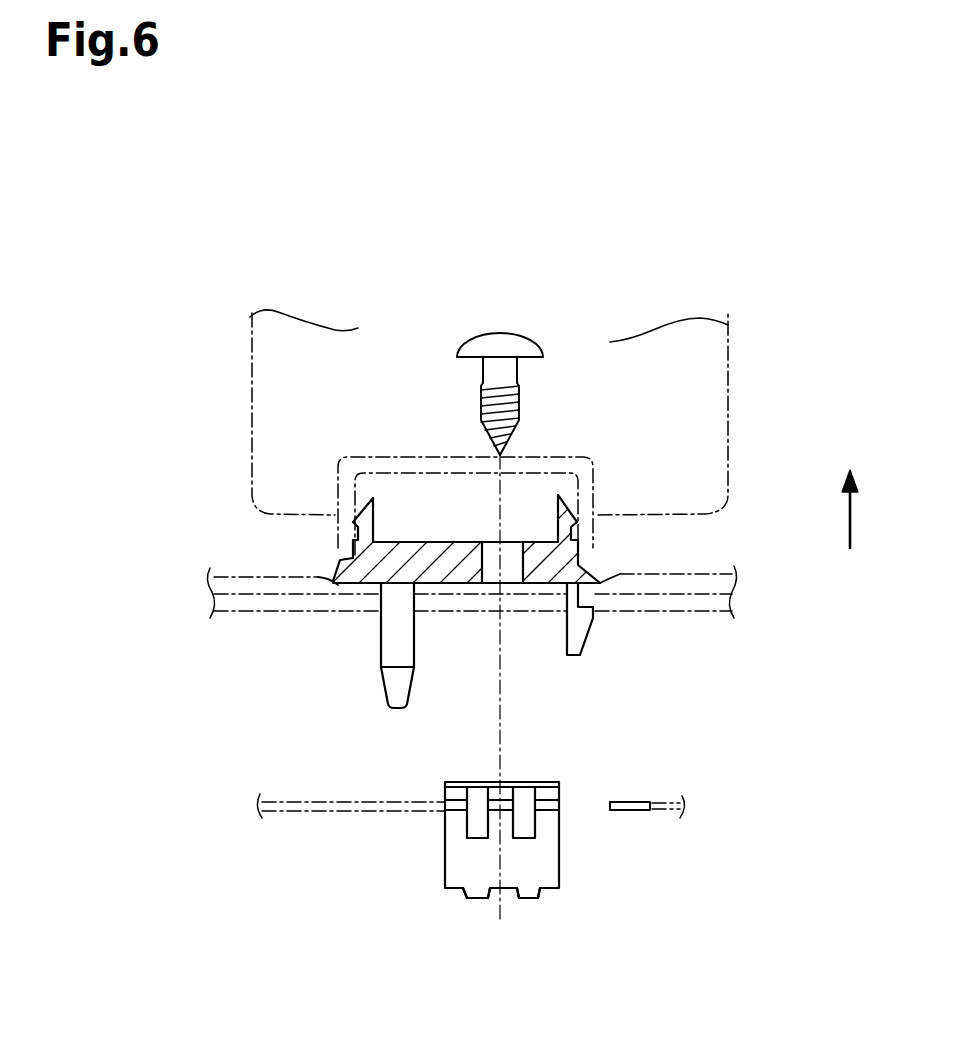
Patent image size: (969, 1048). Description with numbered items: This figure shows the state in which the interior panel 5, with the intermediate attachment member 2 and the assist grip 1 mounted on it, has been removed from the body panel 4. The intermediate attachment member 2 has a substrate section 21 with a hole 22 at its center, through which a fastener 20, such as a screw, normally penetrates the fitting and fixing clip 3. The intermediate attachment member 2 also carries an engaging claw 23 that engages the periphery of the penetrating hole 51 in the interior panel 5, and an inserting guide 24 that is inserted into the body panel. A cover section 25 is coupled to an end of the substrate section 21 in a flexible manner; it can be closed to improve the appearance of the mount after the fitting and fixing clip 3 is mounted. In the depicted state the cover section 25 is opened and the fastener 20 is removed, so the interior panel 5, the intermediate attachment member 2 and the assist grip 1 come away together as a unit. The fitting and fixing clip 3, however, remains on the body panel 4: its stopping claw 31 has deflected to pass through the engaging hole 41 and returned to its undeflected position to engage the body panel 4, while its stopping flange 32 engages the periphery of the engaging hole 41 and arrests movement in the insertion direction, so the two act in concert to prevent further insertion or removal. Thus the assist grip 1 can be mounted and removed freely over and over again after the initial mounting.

The assist grip 1 is at (677, 398).
The intermediate attachment member 2 is at (420, 518).
The fitting and fixing clip 3 is at (445, 899).
The body panel 4 is at (515, 873).
The interior panel 5 is at (693, 603).
The fastener 20 is at (502, 347).
The substrate section 21 is at (362, 572).
The hole 22 is at (513, 568).
The engaging claw 23 is at (577, 628).
The inserting guide 24 is at (397, 638).
The cover section 25 is at (377, 478).
The stopping claw 31 is at (460, 887).
The stopping flange 32 is at (458, 777).
The engaging hole 41 is at (580, 808).
The penetrating hole 51 is at (468, 605).